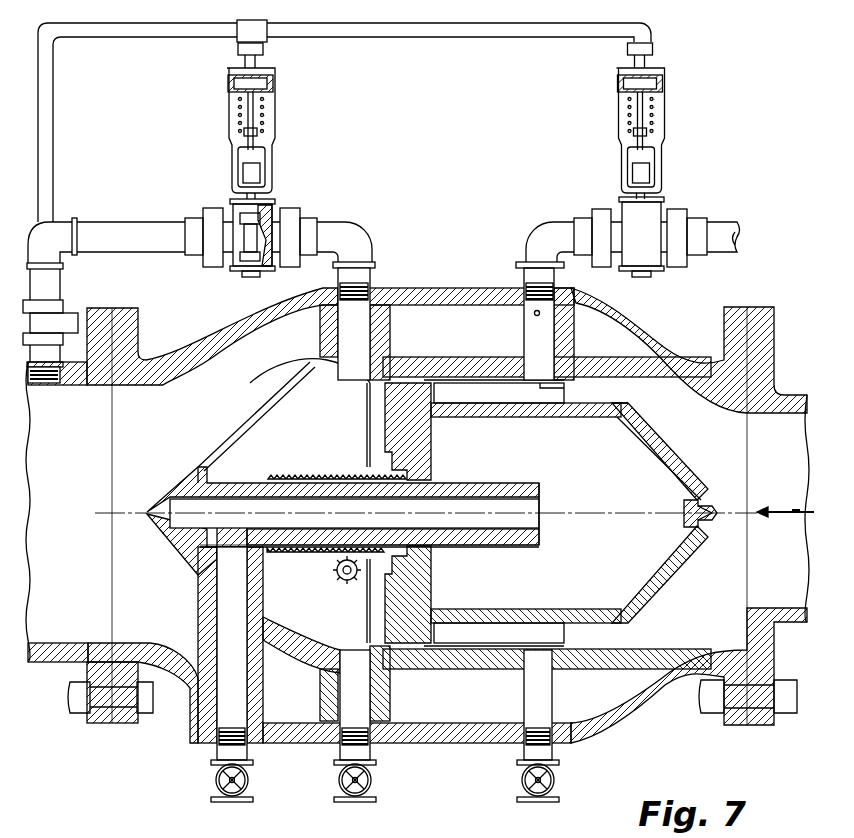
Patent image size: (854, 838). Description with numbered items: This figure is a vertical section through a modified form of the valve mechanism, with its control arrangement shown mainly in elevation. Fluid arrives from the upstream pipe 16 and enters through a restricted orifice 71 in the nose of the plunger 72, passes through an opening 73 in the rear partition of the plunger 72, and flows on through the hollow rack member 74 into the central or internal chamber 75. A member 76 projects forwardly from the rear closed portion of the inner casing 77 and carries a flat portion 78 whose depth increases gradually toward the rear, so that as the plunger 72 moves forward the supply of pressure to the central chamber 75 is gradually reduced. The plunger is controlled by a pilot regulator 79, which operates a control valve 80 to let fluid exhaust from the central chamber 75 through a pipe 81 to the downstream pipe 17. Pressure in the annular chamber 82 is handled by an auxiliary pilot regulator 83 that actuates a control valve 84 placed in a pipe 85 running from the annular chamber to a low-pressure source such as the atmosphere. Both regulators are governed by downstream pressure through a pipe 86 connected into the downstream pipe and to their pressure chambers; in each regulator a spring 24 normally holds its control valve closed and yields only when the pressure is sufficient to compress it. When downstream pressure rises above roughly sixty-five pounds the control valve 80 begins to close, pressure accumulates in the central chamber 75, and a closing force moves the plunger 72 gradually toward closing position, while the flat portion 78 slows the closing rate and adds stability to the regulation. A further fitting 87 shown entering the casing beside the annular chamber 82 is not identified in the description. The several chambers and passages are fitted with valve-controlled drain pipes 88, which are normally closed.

The upstream pipe 16 is at (785, 493).
The downstream pipe 17 is at (57, 632).
The spring 24 is at (263, 119).
The restricted orifice 71 is at (717, 510).
The plunger 72 is at (669, 456).
The opening 73 is at (436, 540).
The hollow rack member 74 is at (305, 475).
The central chamber 75 is at (310, 389).
The member 76 is at (488, 484).
The inner casing 77 is at (243, 419).
The flat portion 78 is at (505, 545).
The pilot regulator 79 is at (276, 89).
The control valve 80 is at (270, 215).
The pipe 81 is at (350, 237).
The annular chamber 82 is at (499, 393).
The auxiliary pilot regulator 83 is at (664, 88).
The control valve 84 is at (653, 216).
The pipe 85 is at (564, 216).
The pipe 86 is at (45, 146).
The pipe 87 is at (522, 317).
The drain pipes 88 is at (332, 781).